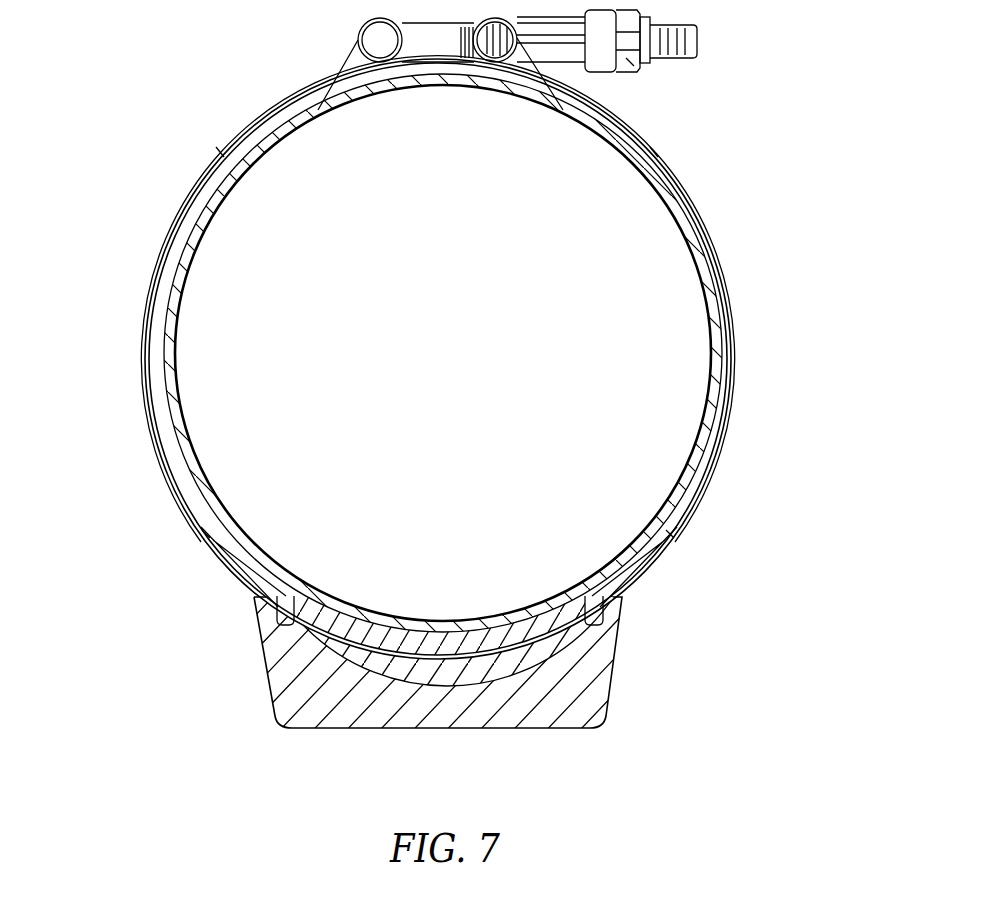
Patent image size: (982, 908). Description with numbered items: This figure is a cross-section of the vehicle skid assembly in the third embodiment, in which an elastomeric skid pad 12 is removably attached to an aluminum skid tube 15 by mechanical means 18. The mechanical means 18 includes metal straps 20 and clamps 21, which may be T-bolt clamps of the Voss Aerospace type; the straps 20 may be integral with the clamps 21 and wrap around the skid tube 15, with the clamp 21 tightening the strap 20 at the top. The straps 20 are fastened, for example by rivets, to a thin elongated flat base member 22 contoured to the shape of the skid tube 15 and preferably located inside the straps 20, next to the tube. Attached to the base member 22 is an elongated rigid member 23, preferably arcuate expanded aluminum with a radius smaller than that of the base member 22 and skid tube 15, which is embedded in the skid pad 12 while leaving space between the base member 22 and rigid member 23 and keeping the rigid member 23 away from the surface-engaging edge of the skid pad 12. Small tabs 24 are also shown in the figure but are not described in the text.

The skid pad 12 is at (613, 690).
The skid tube 15 is at (200, 345).
The mechanical means 18 is at (198, 163).
The metal strap 20 is at (731, 352).
The clamp 21 is at (640, 58).
The base member 22 is at (690, 545).
The elongated rigid member 23 is at (480, 678).
The tab 24 is at (612, 609).